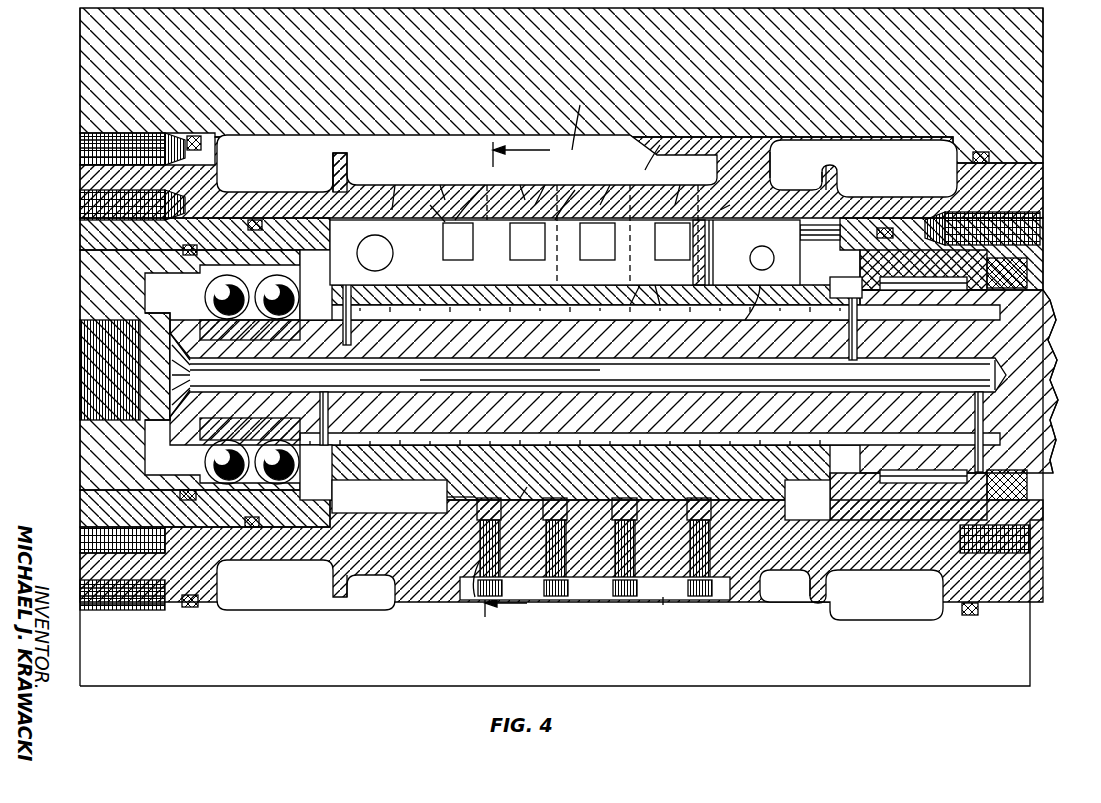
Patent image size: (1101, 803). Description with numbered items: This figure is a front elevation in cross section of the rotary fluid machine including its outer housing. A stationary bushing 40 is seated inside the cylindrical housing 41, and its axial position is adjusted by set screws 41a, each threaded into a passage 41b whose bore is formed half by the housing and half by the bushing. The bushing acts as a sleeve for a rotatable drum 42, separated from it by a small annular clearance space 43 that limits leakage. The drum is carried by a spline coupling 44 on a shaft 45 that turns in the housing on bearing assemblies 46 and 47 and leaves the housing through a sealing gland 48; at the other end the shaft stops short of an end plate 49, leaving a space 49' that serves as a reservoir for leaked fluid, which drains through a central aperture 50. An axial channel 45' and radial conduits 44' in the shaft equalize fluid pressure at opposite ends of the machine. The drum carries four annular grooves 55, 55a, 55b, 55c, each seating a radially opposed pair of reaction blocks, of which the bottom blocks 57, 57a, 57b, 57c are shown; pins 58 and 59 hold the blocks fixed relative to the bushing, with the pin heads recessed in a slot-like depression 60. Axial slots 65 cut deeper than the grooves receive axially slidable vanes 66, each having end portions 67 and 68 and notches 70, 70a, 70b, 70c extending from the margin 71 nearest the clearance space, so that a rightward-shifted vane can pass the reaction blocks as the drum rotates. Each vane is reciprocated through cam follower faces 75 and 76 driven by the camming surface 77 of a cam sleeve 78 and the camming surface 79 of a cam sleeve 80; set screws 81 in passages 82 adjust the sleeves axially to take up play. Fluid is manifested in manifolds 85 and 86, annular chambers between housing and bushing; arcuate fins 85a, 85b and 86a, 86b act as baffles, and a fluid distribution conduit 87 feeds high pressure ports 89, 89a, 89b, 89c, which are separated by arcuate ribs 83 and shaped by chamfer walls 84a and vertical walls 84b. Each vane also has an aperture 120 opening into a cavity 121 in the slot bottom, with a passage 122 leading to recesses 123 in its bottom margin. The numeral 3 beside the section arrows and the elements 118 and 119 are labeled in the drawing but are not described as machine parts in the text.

The cylindrical housing 41 is at (88, 36).
The set screws 41a is at (92, 150).
The passage 41b is at (110, 135).
The stationary bushing 40 is at (246, 210).
The rotatable drum 42 is at (462, 500).
The clearance space 43 is at (773, 200).
The spline coupling 44 is at (266, 375).
The radial conduits 44' is at (334, 324).
The shaft 45 is at (1046, 396).
The axial channel 45' is at (588, 375).
The bearing assembly 46 is at (194, 307).
The bearing assembly 47 is at (920, 292).
The gland 48 is at (905, 268).
The end plate 49 is at (170, 370).
The space 49' is at (105, 366).
The central aperture 50 is at (88, 392).
The annular groove 55 is at (485, 190).
The annular groove 55a is at (560, 498).
The annular groove 55b is at (628, 498).
The annular groove 55c is at (694, 498).
The reaction block 57 is at (475, 530).
The reaction block 57a is at (543, 516).
The reaction block 57b is at (606, 539).
The reaction block 57c is at (687, 512).
The pin 58 is at (560, 530).
The pin 59 is at (475, 600).
The slot-like depression 60 is at (663, 607).
The axial slots 65 is at (830, 178).
The vane 66 is at (420, 253).
The end portion 67 is at (368, 210).
The end portion 68 is at (810, 226).
The notch 70 is at (467, 251).
The notch 70a is at (529, 241).
The notch 70b is at (599, 241).
The notch 70c is at (673, 241).
The margin 71 is at (400, 186).
The cam follower face 75 is at (368, 262).
The cam follower face 76 is at (775, 277).
The camming surface 77 is at (350, 494).
The cam sleeve 78 is at (92, 240).
The camming surface 79 is at (815, 500).
The cam sleeve 80 is at (1020, 262).
The set screws 81 is at (90, 213).
The passages 82 is at (210, 198).
The arcuate ribs 83 is at (617, 183).
The chamfer walls 84a is at (470, 180).
The vertical walls 84b is at (488, 215).
The manifold 85 is at (292, 173).
The arcuate fin 85a is at (342, 152).
The arcuate fin 85b is at (338, 590).
The manifold 86 is at (925, 173).
The arcuate fin 86a is at (832, 176).
The arcuate fin 86b is at (826, 600).
The fluid distribution conduit 87 is at (567, 116).
The high pressure port 89 is at (474, 195).
The high pressure port 89a is at (579, 197).
The high pressure port 89b is at (660, 149).
The high pressure port 89c is at (742, 205).
The plate 118 is at (443, 490).
The passage 119 is at (538, 481).
The aperture 120 is at (722, 254).
The cavities 121 is at (745, 325).
The passage 122 is at (630, 308).
The recesses 123 is at (660, 308).
The section line 3 is at (521, 379).